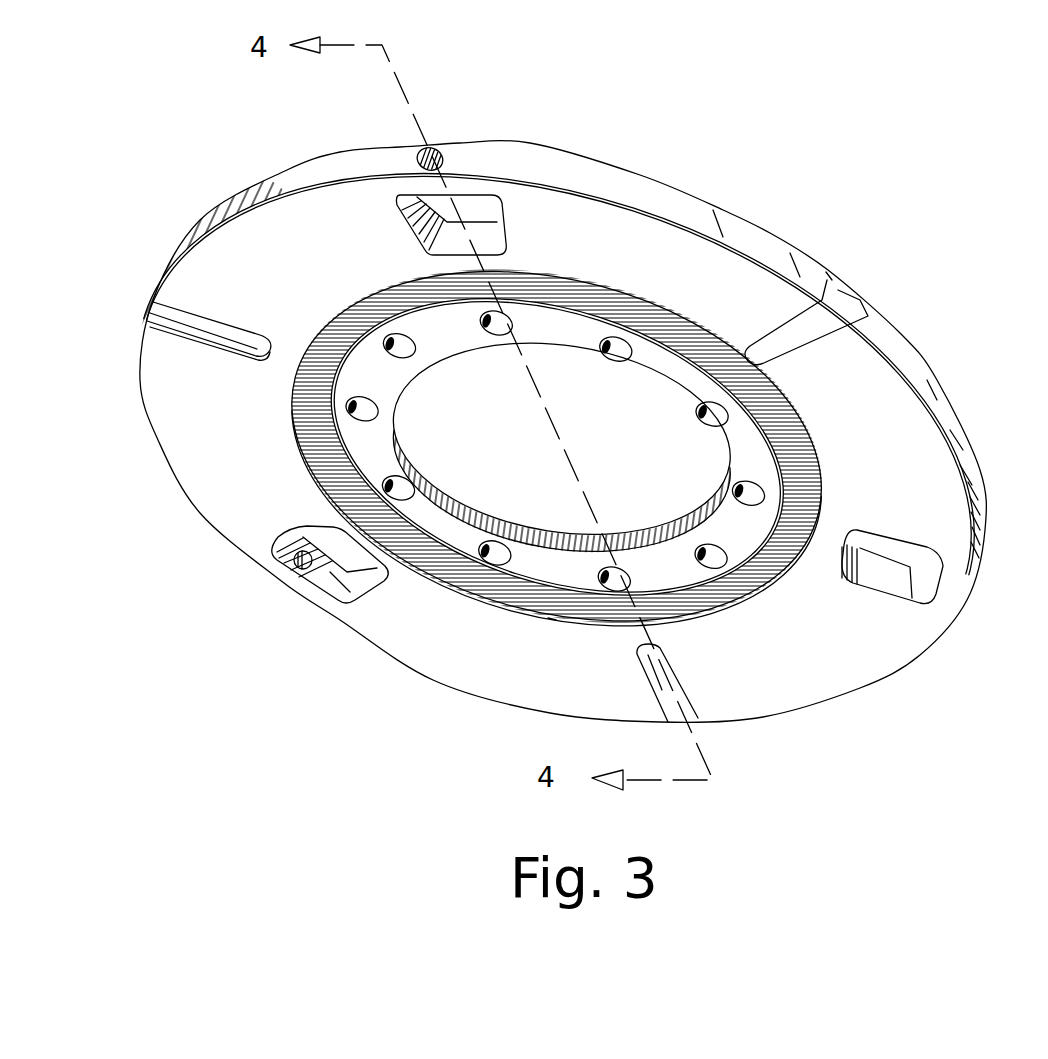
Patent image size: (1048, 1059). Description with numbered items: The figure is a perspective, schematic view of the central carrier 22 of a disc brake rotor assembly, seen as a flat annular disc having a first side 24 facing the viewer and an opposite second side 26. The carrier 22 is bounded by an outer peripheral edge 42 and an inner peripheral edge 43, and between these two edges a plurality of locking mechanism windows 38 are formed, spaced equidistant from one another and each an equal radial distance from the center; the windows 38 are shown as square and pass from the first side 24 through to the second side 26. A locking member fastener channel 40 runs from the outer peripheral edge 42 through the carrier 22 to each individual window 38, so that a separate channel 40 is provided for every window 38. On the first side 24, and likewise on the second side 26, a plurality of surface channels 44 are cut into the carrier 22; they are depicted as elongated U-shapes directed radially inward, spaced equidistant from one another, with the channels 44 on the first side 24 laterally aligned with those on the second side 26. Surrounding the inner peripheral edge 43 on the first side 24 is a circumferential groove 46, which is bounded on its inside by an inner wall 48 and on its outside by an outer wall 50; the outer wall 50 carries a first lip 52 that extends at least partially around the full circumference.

The central carrier 22 is at (907, 452).
The first side 24 is at (247, 284).
The second side 26 is at (617, 232).
The locking mechanism windows 38 is at (470, 212).
The locking member fastener channel 40 is at (437, 148).
The outer peripheral edge 42 is at (285, 177).
The inner peripheral edge 43 is at (498, 517).
The surface channels 44 is at (172, 318).
The circumferential groove 46 is at (750, 597).
The inner wall 48 is at (786, 538).
The outer wall 50 is at (710, 623).
The first lip 52 is at (550, 620).